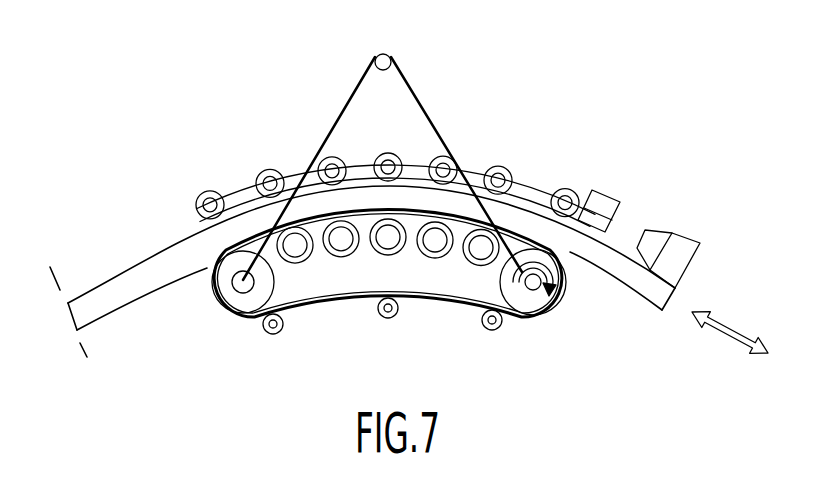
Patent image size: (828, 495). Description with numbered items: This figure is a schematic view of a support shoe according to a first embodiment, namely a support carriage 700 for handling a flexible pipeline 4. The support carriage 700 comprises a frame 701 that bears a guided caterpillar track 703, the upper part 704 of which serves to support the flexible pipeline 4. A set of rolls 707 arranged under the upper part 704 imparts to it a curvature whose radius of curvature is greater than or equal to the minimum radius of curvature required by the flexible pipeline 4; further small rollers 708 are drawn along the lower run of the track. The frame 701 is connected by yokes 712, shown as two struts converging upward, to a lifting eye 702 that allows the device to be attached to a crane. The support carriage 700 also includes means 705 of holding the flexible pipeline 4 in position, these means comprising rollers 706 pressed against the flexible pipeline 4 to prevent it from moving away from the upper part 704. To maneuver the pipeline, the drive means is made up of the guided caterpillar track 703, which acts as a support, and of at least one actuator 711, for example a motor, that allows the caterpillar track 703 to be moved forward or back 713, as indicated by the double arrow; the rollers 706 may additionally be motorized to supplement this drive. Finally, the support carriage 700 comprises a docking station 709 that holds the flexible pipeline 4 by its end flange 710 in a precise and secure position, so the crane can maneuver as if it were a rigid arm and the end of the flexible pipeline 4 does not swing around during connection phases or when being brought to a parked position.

The flexible pipeline 4 is at (128, 284).
The support carriage 700 is at (359, 146).
The frame 701 is at (248, 336).
The lifting eye 702 is at (378, 55).
The guided caterpillar track 703 is at (448, 303).
The upper part 704 is at (257, 233).
The means of holding the flexible pipeline in position 705 is at (295, 176).
The rollers 706 is at (498, 167).
The rolls 707 is at (337, 263).
The return rollers 708 is at (380, 310).
The docking station 709 is at (607, 192).
The end flange 710 is at (677, 247).
The actuator 711 is at (537, 300).
The yokes 712 is at (432, 117).
The forward or back movement 713 is at (732, 333).